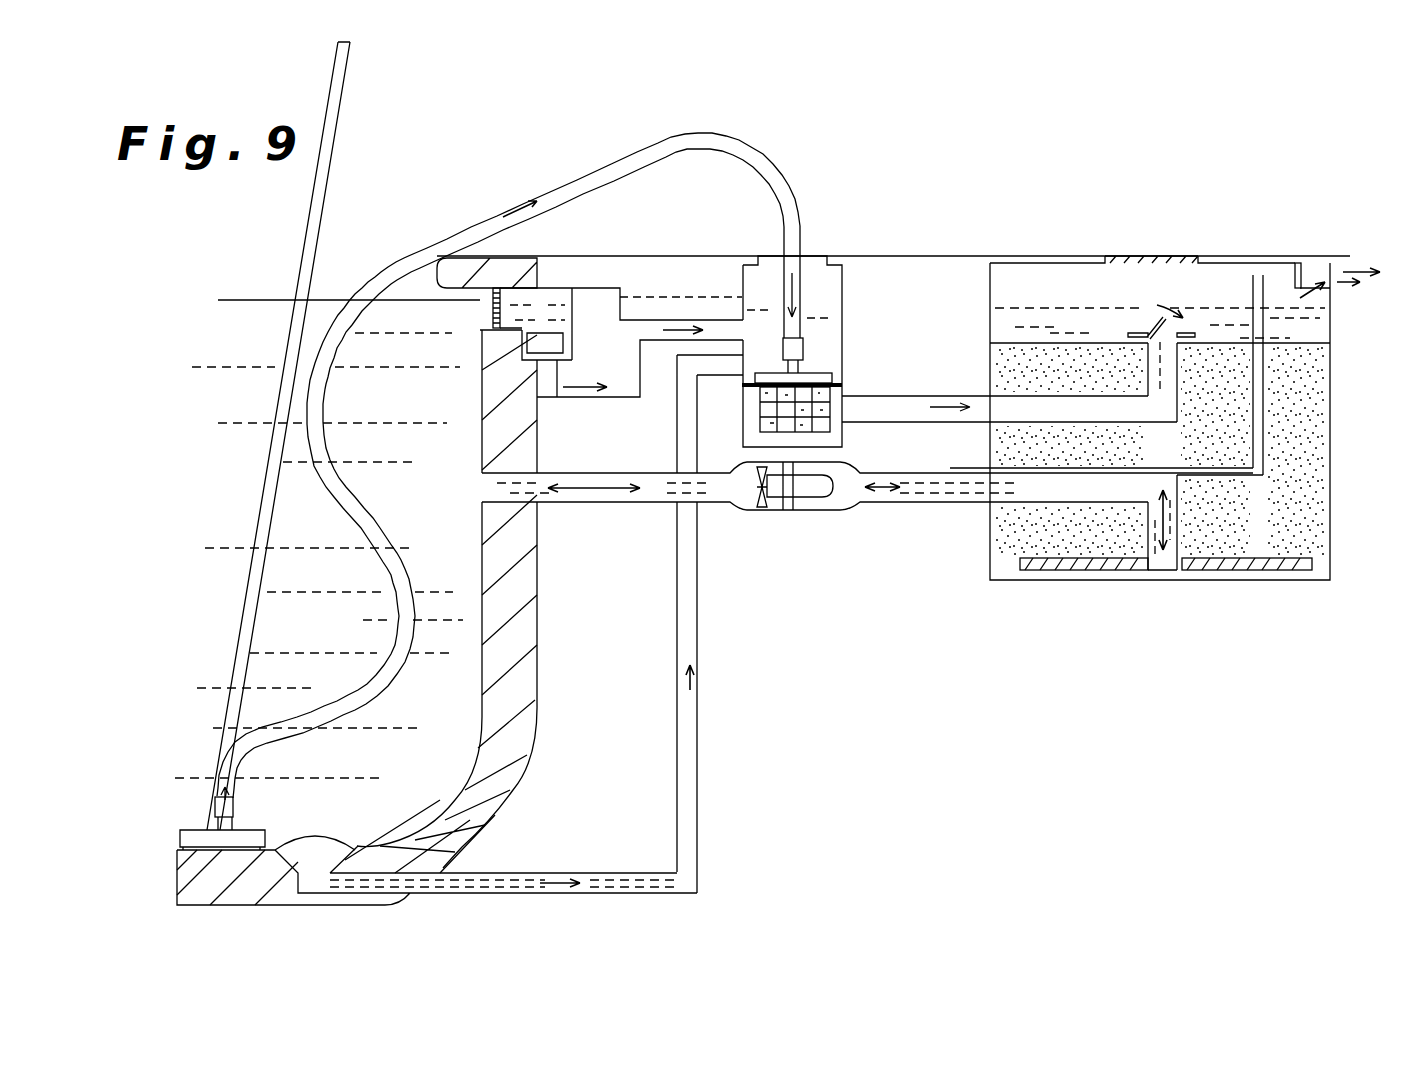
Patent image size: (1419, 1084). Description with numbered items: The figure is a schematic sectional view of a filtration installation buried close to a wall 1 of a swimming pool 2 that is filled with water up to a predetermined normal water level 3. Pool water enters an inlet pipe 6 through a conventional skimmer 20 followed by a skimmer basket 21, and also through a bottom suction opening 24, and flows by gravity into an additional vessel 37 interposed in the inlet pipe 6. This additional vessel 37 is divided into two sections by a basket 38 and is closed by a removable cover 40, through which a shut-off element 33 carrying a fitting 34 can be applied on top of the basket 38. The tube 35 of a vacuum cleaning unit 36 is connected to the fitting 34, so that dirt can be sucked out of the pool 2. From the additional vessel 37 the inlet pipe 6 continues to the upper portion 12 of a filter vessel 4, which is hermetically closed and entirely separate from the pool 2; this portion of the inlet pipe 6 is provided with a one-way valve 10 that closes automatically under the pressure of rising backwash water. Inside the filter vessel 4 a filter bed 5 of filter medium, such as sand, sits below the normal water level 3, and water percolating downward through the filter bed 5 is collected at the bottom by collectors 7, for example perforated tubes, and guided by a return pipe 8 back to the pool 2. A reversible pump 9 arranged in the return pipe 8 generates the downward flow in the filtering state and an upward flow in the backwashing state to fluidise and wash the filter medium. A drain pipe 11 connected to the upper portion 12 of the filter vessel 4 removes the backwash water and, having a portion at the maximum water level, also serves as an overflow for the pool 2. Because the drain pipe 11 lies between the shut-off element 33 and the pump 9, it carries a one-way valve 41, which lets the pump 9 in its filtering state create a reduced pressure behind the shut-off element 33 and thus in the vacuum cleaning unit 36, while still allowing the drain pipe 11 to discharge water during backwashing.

The wall 1 is at (525, 703).
The swimming pool 2 is at (313, 527).
The normal water level 3 is at (275, 298).
The filter vessel 4 is at (1352, 510).
The filter bed 5 is at (1312, 400).
The inlet pipe 6 is at (660, 318).
The collectors 7 is at (1160, 252).
The return pipe 8 is at (930, 500).
The reversible pump 9 is at (815, 490).
The one-way valve 10 is at (1148, 330).
The drain pipe 11 is at (1355, 270).
The upper portion 12 is at (1312, 323).
The skimmer 20 is at (497, 303).
The skimmer basket 21 is at (570, 342).
The bottom suction opening 24 is at (312, 870).
The shut-off element 33 is at (770, 372).
The fitting 34 is at (800, 368).
The tube 35 is at (748, 160).
The vacuum cleaning unit 36 is at (215, 802).
The additional vessel 37 is at (857, 323).
The basket 38 is at (850, 400).
The removable cover 40 is at (817, 264).
The one-way valve 41 is at (1302, 265).